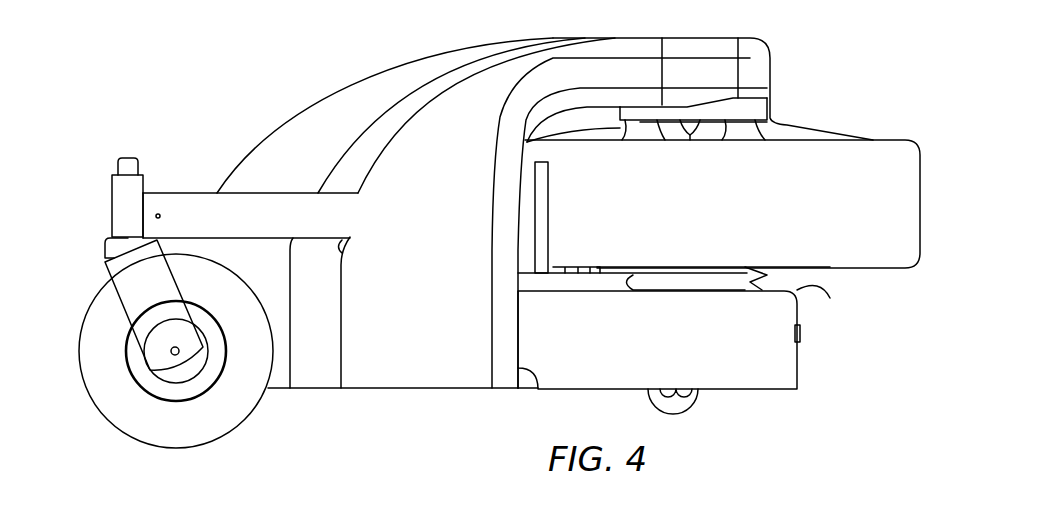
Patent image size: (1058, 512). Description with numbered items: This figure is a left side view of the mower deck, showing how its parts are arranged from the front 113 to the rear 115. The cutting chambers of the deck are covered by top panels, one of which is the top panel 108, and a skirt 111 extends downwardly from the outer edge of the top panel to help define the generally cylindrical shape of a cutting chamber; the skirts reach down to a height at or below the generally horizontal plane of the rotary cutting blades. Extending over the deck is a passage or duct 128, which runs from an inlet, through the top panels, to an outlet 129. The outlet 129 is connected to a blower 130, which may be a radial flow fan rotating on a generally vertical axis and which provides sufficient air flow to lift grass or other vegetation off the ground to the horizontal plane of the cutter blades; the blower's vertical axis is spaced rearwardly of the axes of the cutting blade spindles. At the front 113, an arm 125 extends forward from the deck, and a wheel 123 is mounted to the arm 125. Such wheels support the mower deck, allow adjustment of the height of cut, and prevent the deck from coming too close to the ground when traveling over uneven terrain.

The top panel 108 is at (767, 290).
The skirt 111 is at (745, 363).
The front 113 is at (85, 243).
The rear 115 is at (840, 337).
The wheel 123 is at (245, 413).
The arm 125 is at (190, 203).
The duct 128 is at (410, 83).
The outlet 129 is at (760, 72).
The blower 130 is at (875, 158).